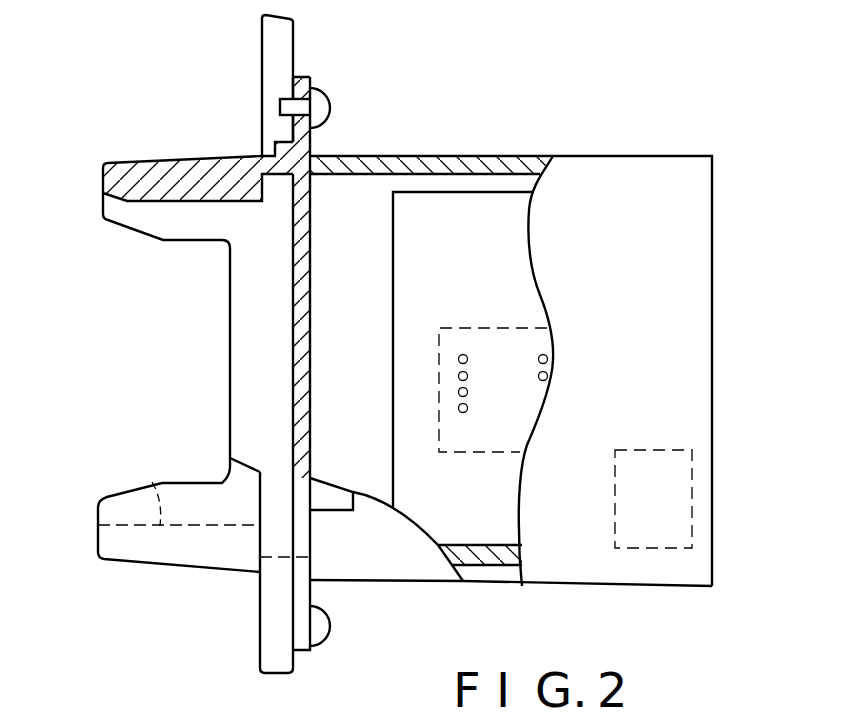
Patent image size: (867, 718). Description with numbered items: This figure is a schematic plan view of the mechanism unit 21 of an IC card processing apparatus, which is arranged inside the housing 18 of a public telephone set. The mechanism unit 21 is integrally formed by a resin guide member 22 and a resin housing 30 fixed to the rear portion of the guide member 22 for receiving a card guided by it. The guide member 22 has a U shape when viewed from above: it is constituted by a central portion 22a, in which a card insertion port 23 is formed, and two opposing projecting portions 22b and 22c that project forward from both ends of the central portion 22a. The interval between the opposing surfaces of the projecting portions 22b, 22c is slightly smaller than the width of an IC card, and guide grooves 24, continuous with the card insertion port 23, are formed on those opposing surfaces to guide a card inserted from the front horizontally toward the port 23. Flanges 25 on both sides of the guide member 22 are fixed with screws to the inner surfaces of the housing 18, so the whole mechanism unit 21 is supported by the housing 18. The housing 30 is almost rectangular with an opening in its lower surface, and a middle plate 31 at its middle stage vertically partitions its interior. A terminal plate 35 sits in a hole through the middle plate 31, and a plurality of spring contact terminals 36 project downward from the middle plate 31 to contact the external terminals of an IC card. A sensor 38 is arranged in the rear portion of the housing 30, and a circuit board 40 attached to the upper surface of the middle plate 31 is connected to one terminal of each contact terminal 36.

The housing 18 is at (287, 38).
The mechanism unit 21 is at (735, 363).
The guide member 22 is at (243, 156).
The central portion 22a is at (230, 312).
The projecting portion 22b is at (102, 214).
The projecting portion 22c is at (133, 563).
The card insertion port 23 is at (250, 376).
The guide grooves 24 is at (173, 201).
The flanges 25 is at (312, 78).
The housing 30 is at (618, 156).
The middle plate 31 is at (378, 188).
The terminal plate 35 is at (505, 327).
The contact terminals 36 is at (458, 408).
The sensor 38 is at (692, 490).
The circuit board 40 is at (493, 212).